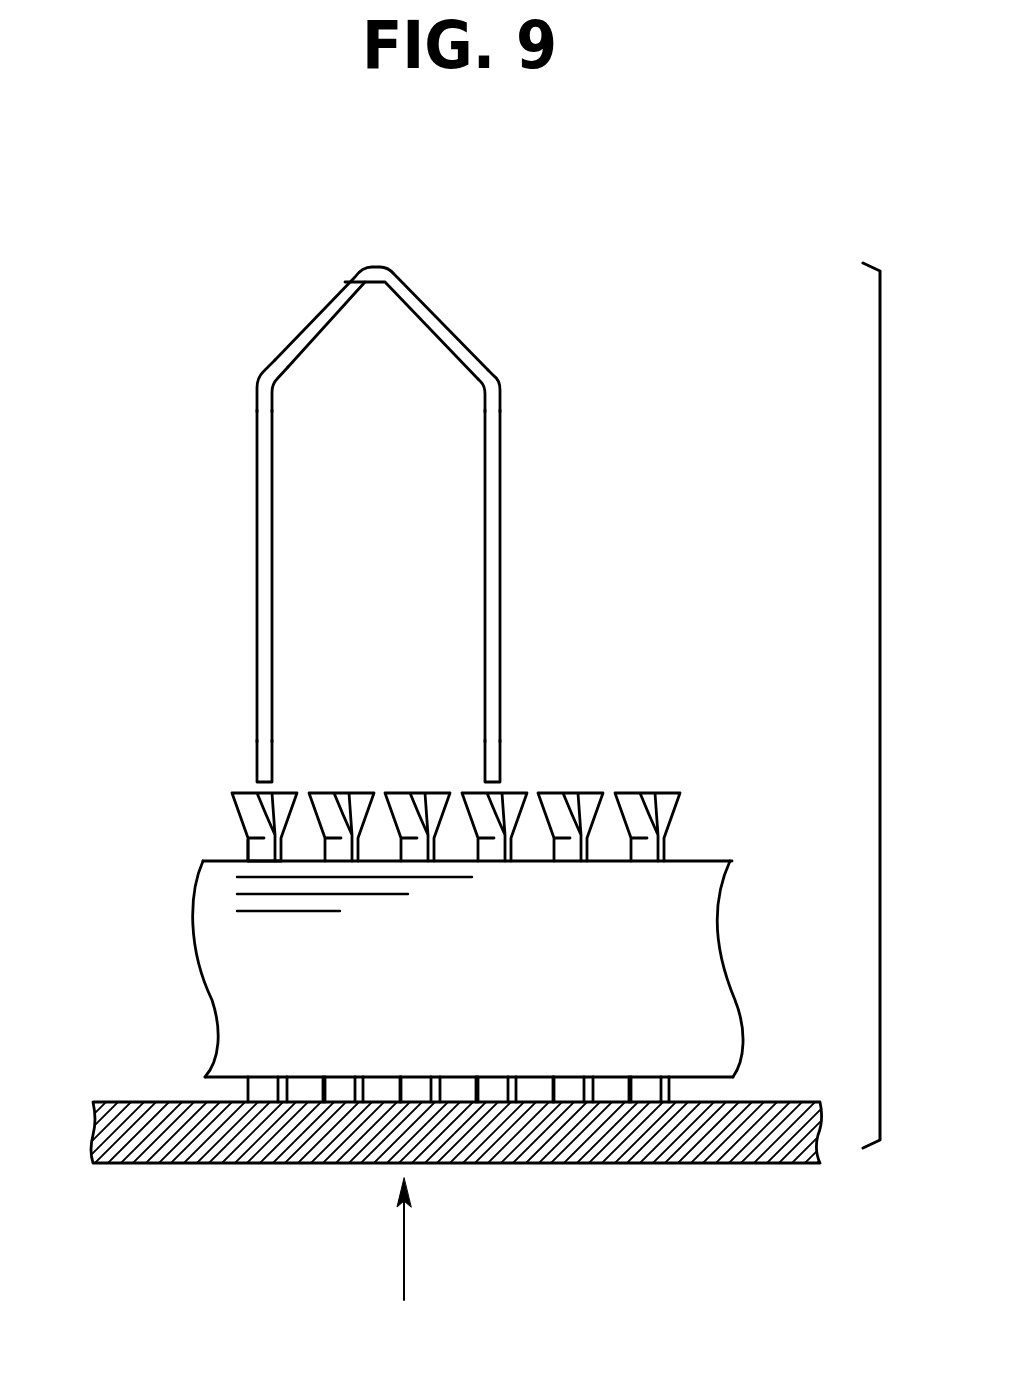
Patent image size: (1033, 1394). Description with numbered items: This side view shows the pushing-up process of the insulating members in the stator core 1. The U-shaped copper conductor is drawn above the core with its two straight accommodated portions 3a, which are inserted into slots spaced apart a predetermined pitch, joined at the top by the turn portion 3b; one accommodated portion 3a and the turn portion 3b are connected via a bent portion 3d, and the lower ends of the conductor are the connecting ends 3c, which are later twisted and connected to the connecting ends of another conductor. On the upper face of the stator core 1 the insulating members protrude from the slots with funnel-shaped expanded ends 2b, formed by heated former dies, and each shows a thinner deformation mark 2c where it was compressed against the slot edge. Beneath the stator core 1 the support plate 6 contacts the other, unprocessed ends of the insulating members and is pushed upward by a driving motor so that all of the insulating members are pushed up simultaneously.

The stator core 1 is at (710, 960).
The expanded ends 2b is at (667, 802).
The deformation mark 2c is at (247, 840).
The accommodated portions 3a is at (264, 560).
The turn portion 3b is at (432, 292).
The connecting ends 3c is at (264, 733).
The bent portion 3d is at (265, 393).
The support plate 6 is at (519, 1142).